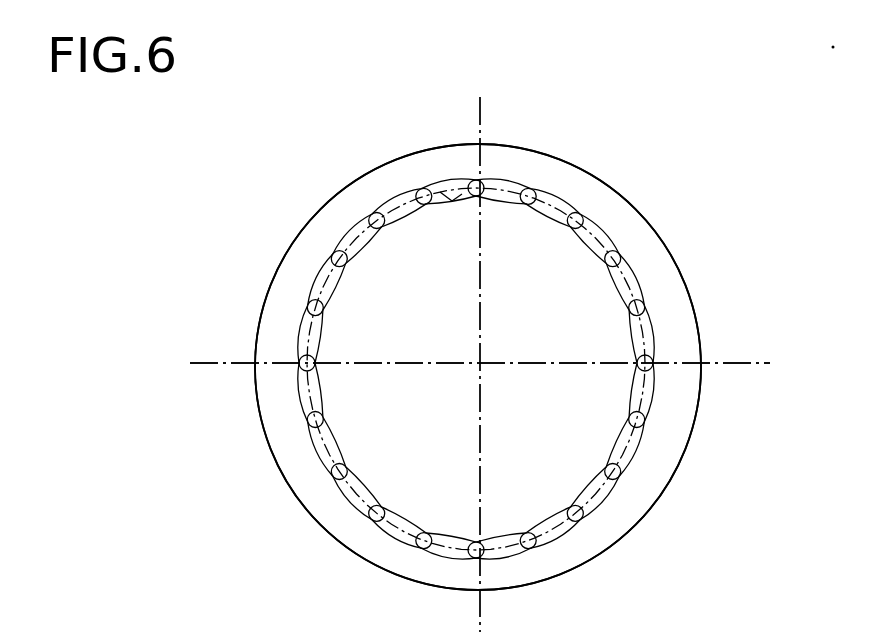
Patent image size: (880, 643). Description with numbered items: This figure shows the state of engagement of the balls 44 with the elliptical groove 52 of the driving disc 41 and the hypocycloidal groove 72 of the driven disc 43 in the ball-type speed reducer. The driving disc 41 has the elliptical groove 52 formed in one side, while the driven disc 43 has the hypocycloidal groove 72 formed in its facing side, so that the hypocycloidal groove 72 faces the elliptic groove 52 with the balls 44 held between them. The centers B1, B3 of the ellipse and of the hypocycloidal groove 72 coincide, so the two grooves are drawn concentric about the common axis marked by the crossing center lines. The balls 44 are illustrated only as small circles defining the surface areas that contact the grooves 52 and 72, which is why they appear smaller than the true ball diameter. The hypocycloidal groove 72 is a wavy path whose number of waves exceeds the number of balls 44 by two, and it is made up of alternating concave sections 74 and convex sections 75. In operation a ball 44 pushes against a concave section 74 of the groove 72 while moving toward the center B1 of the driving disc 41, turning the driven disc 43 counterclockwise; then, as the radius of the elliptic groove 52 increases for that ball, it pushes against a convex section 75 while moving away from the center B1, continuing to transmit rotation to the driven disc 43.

The driven disc 43 is at (622, 193).
The driving disc 41 is at (478, 367).
The balls 44 is at (597, 232).
The elliptical groove 52 is at (645, 403).
The hypocycloidal groove 72 is at (512, 200).
The concave section 74 is at (400, 222).
The convex section 75 is at (452, 193).
The center of ellipse B1 is at (481, 366).
The center of hypocycloidal groove B3 is at (480, 364).